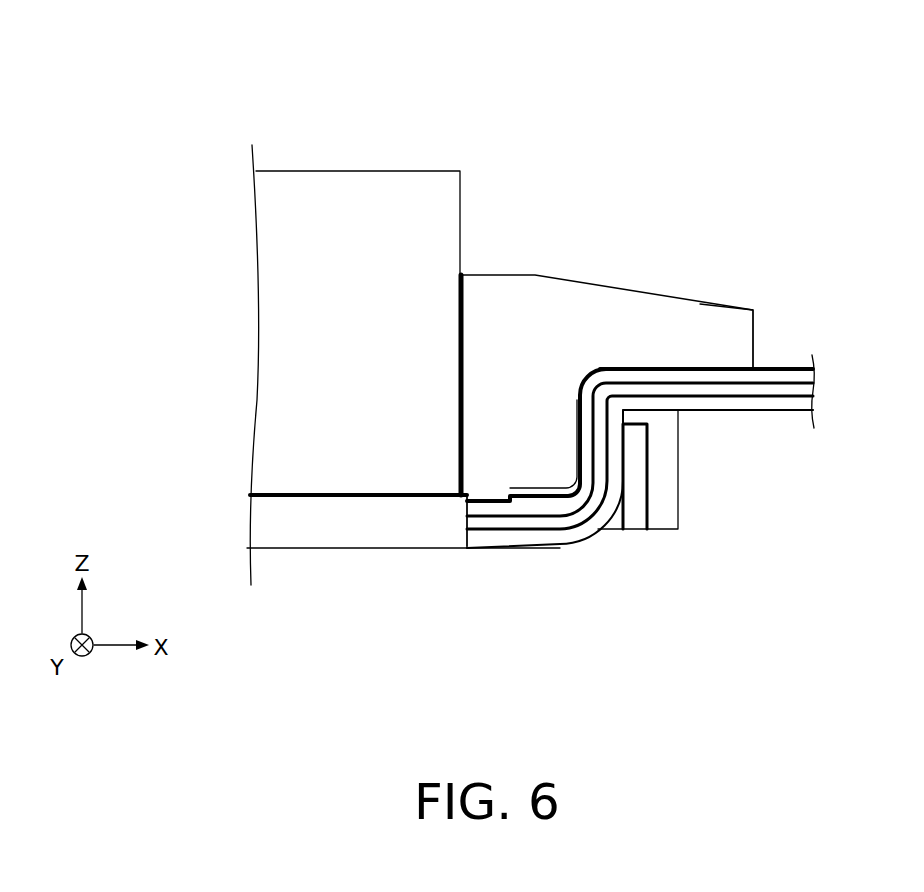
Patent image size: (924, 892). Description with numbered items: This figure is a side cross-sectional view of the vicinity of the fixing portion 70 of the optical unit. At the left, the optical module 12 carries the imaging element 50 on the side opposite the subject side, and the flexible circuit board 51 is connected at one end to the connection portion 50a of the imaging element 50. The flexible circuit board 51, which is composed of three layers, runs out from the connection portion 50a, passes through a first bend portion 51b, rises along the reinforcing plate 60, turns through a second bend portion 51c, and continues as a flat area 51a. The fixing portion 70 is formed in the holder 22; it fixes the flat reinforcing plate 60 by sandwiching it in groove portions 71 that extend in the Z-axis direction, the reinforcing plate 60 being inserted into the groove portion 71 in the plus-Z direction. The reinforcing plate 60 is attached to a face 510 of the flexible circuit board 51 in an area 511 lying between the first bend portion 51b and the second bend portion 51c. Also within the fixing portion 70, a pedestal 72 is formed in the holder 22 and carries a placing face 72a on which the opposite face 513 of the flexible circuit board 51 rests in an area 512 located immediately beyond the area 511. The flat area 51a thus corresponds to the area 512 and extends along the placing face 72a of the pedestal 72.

The optical module 12 is at (331, 187).
The holder 22 is at (509, 287).
The imaging element 50 is at (326, 530).
The connection portion 50a is at (466, 549).
The flexible circuit board 51 is at (682, 410).
The flat area 51a is at (781, 368).
The first bend portion 51b is at (630, 533).
The second bend portion 51c is at (578, 350).
The reinforcing plate 60 is at (642, 508).
The fixing portion 70 is at (836, 116).
The groove portion 71 is at (624, 367).
The pedestal 72 is at (732, 323).
The placing face 72a is at (684, 367).
The face of flexible circuit board 510 is at (648, 456).
The area to which reinforcing plate is attached 511 is at (680, 506).
The area placed on placing face 512 is at (662, 380).
The face of flexible circuit board 513 is at (719, 367).